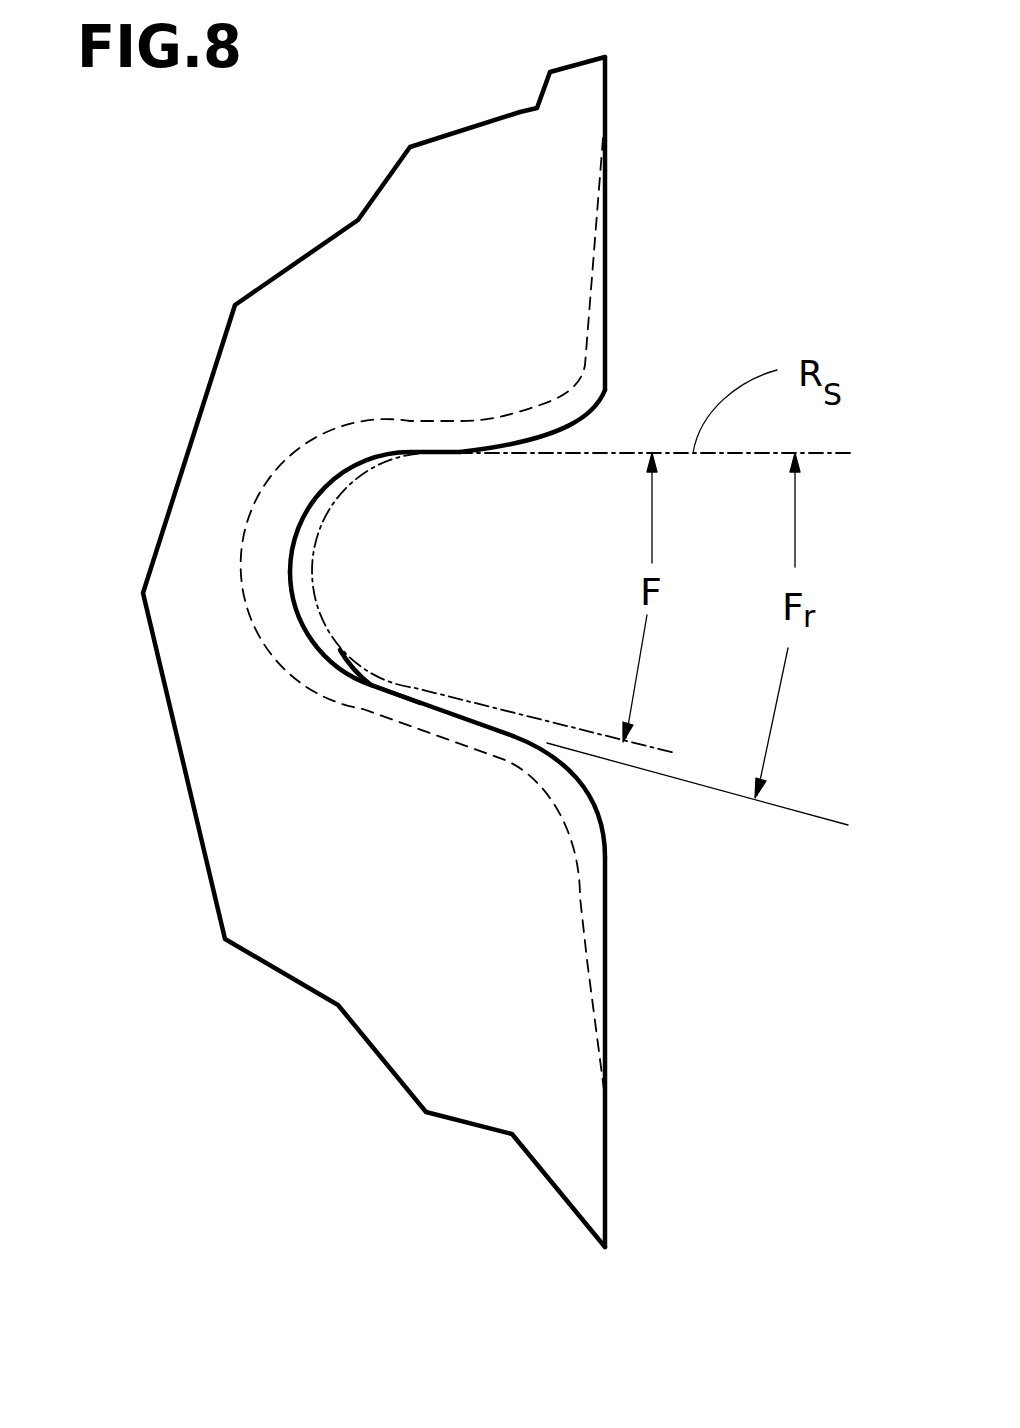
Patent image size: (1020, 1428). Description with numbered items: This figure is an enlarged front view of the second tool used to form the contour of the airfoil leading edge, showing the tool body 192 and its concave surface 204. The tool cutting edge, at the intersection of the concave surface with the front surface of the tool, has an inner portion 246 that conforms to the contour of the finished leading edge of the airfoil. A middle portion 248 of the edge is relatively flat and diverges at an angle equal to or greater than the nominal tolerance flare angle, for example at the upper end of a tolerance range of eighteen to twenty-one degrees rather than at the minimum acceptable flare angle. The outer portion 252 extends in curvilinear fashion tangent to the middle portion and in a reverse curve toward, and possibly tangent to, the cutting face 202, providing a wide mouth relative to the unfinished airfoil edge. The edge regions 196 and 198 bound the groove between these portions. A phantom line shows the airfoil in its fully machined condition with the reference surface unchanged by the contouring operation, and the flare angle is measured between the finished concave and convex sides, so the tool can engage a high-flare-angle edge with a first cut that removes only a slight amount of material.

The cutting insert 192 is at (510, 226).
The lower flank surface 196 is at (362, 682).
The upper flank surface 198 is at (456, 453).
The cutting face 202 is at (606, 1102).
The concave surface 204 is at (578, 442).
The inner portion 246 is at (290, 573).
The middle portion 248 is at (445, 715).
The outer portion 252 is at (510, 738).